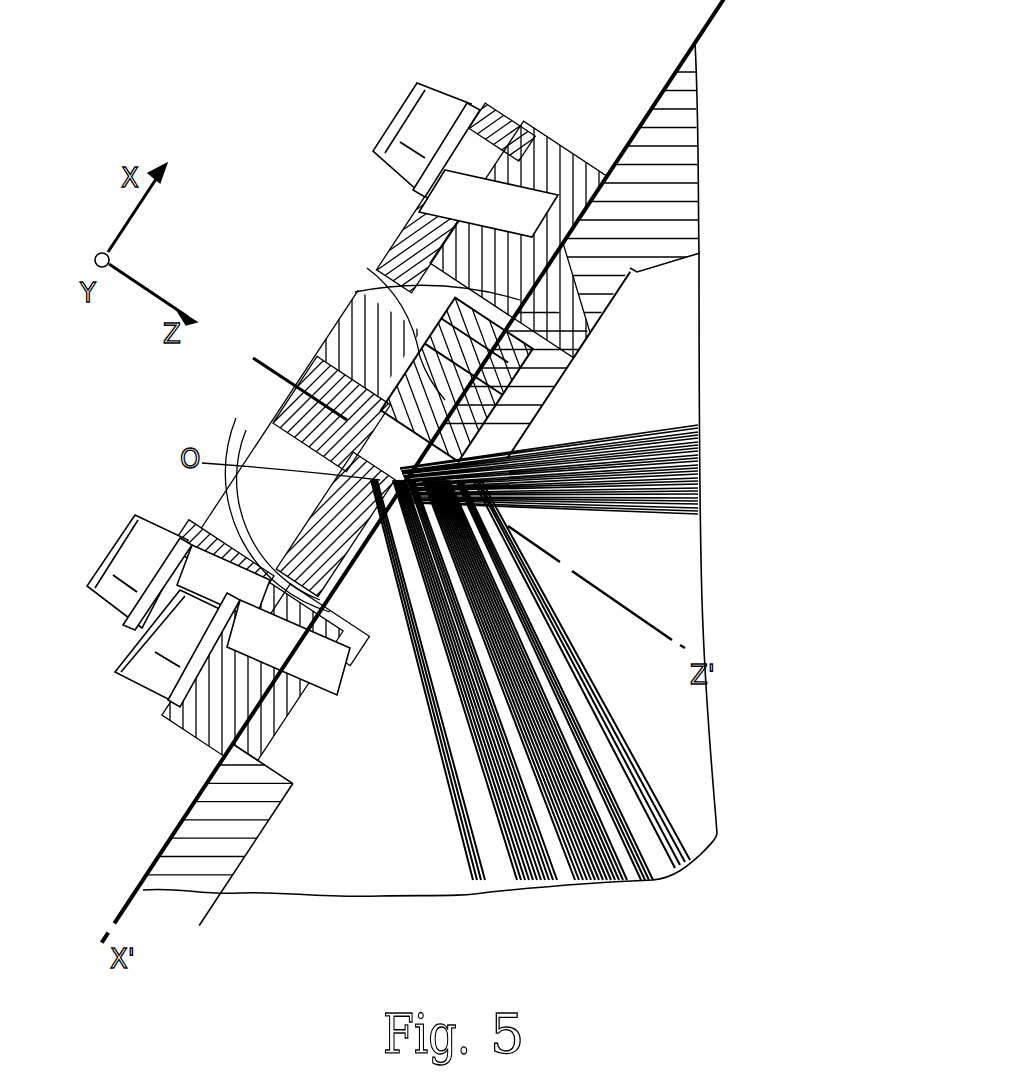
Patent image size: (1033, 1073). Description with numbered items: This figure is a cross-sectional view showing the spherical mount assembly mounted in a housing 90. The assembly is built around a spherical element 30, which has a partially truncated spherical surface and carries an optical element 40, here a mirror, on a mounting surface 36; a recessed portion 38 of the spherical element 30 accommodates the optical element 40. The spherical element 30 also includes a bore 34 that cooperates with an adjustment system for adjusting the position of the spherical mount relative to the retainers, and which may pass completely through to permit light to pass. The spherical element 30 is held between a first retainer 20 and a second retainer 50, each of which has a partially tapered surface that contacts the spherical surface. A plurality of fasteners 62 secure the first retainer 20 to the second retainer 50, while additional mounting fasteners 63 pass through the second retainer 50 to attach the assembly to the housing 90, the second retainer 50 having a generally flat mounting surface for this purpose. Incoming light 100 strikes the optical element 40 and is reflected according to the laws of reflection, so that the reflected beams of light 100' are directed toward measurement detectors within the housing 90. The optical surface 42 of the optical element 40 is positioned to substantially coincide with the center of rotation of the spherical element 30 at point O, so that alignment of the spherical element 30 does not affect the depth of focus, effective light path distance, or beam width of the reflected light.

The first retainer 20 is at (508, 118).
The spherical element 30 is at (345, 340).
The bore 34 is at (280, 412).
The mounting surface 36 is at (377, 278).
The recessed portion 38 is at (225, 735).
The optical element 40 is at (467, 370).
The optical surface 42 is at (357, 610).
The second retainer 50 is at (582, 170).
The fasteners 62 is at (410, 118).
The additional mounting fasteners 63 is at (150, 690).
The housing 90 is at (685, 172).
The incoming light 100 is at (546, 680).
The beams of light reflected 100' is at (589, 468).